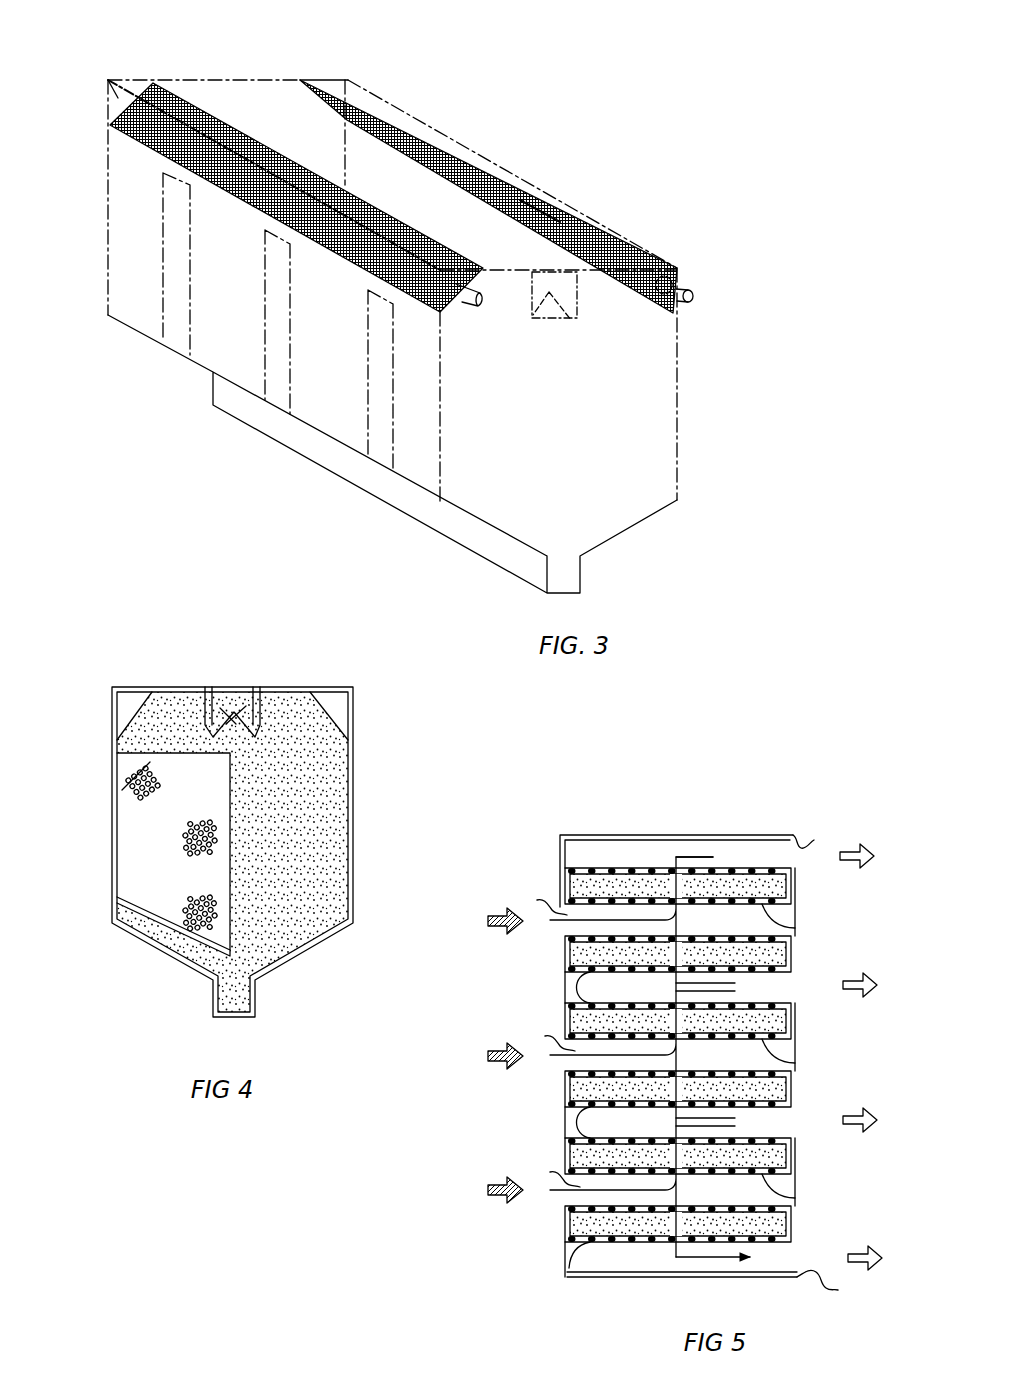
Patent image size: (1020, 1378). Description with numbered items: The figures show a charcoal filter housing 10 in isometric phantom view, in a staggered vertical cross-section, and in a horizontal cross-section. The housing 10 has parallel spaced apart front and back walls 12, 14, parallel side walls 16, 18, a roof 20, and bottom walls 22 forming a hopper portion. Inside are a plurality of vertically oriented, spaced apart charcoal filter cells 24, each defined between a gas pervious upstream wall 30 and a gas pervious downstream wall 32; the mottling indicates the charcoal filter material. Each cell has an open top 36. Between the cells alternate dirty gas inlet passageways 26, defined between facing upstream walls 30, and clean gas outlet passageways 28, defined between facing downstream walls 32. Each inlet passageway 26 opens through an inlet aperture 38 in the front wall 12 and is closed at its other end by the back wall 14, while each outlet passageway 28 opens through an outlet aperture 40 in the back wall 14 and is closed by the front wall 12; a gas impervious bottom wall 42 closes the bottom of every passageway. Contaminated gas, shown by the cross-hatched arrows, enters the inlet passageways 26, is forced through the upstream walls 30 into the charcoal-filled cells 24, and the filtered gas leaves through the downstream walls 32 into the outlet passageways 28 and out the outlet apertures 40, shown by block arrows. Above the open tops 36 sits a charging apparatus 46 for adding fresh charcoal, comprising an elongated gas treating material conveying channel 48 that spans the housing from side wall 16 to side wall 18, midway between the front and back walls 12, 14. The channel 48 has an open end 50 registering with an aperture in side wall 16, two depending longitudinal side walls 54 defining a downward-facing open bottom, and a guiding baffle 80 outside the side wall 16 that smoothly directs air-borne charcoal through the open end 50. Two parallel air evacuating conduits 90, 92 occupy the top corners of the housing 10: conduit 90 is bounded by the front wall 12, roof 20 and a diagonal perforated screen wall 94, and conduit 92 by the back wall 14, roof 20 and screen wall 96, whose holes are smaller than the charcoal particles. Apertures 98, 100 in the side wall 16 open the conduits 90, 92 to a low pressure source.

In FIG. 3, the filter housing 10 is at (578, 80).
In FIG. 3, the front wall 12 is at (227, 247).
In FIG. 4, the front wall 12 is at (113, 745).
In FIG. 5, the front wall 12 is at (565, 875).
In FIG. 3, the back wall 14 is at (688, 360).
In FIG. 4, the back wall 14 is at (355, 767).
In FIG. 3, the side wall 16 is at (632, 413).
In FIG. 5, the side wall 16 is at (625, 1278).
In FIG. 3, the side wall 18 is at (100, 167).
In FIG. 5, the side wall 18 is at (669, 835).
In FIG. 3, the roof 20 is at (285, 103).
In FIG. 4, the roof 20 is at (177, 745).
In FIG. 3, the bottom walls 22 is at (618, 533).
In FIG. 5, the charcoal filter cells 24 is at (795, 886).
In FIG. 3, the dirty gas inlet passageways 26 is at (177, 272).
In FIG. 4, the dirty gas inlet passageways 26 is at (145, 867).
In FIG. 5, the dirty gas inlet passageways 26 is at (577, 931).
In FIG. 5, the clean gas outlet passageways 28 is at (787, 852).
In FIG. 4, the upstream wall 30 is at (137, 830).
In FIG. 5, the upstream wall 30 is at (780, 920).
In FIG. 5, the downstream wall 32 is at (578, 868).
In FIG. 4, the open top 36 is at (177, 750).
In FIG. 5, the open top 36 is at (732, 1056).
In FIG. 5, the inlet aperture 38 is at (542, 1034).
In FIG. 5, the outlet aperture 40 is at (800, 838).
In FIG. 5, the bottom wall 42 is at (617, 857).
In FIG. 4, the charging apparatus 46 is at (262, 655).
In FIG. 4, the gas treating material conveying channel 48 is at (233, 697).
In FIG. 3, the open end 50 is at (580, 293).
In FIG. 4, the longitudinal side walls 54 is at (209, 708).
In FIG. 3, the guiding baffle 80 is at (549, 293).
In FIG. 3, the air evacuating conduit 90 is at (107, 78).
In FIG. 4, the air evacuating conduit 90 is at (125, 708).
In FIG. 3, the air evacuating conduit 92 is at (427, 137).
In FIG. 4, the air evacuating conduit 92 is at (335, 703).
In FIG. 3, the screen wall 94 is at (187, 98).
In FIG. 4, the screen wall 94 is at (142, 707).
In FIG. 3, the screen wall 96 is at (557, 230).
In FIG. 4, the screen wall 96 is at (318, 700).
In FIG. 3, the aperture 98 is at (477, 308).
In FIG. 3, the aperture 100 is at (692, 292).